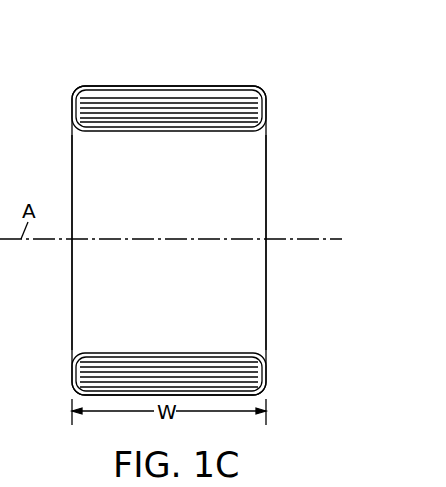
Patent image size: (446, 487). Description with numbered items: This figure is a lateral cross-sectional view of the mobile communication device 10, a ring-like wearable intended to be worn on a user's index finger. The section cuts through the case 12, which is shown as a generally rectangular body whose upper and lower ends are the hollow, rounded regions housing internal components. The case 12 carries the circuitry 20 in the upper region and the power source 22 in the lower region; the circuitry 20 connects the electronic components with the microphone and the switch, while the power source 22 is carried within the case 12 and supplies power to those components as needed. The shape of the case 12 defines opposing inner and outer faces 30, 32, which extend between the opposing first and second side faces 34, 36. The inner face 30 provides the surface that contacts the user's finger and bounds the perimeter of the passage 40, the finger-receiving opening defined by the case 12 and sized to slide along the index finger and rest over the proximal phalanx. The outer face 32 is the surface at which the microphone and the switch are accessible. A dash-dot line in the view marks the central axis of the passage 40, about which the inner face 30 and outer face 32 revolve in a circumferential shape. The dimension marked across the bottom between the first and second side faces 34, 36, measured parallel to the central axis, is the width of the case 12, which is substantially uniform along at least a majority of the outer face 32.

The mobile communication device 10 is at (270, 66).
The case 12 is at (71, 152).
The circuitry 20 is at (124, 108).
The power source 22 is at (97, 372).
The inner face 30 is at (200, 132).
The outer face 32 is at (203, 87).
The first side face 34 is at (72, 312).
The second side face 36 is at (267, 261).
The passage 40 is at (93, 257).